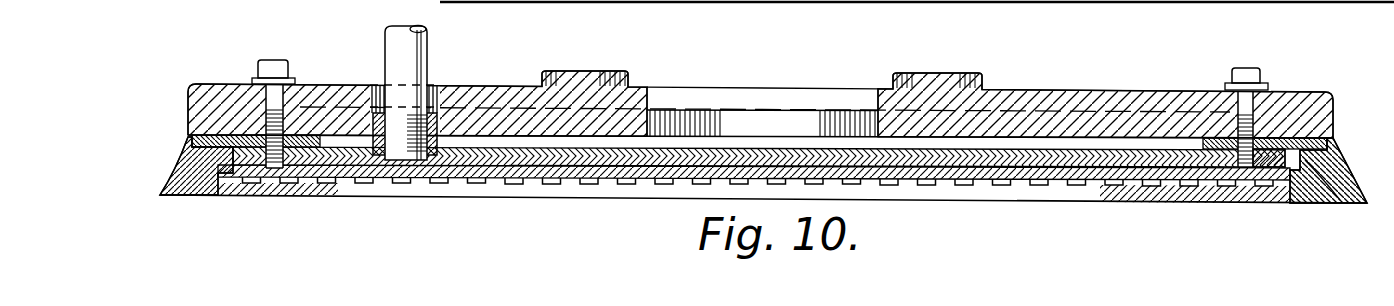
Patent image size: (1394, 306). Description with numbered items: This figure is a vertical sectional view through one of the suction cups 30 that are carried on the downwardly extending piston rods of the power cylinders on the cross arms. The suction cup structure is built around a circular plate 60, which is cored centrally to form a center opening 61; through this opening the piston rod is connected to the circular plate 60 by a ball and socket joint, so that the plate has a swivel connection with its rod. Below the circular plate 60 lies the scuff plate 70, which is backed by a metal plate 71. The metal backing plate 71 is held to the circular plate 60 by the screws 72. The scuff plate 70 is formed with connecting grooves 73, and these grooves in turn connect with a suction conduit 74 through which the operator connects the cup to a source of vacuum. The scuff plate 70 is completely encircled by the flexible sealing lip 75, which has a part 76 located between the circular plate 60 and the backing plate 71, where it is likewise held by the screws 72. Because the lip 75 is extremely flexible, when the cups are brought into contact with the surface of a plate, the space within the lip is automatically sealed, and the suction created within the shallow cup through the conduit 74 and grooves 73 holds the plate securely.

The suction cup 30 is at (1053, 90).
The circular plate 60 is at (622, 104).
The center opening 61 is at (827, 118).
The scuff plate 70 is at (558, 180).
The metal plate 71 is at (683, 160).
The screws 72 is at (276, 72).
The connecting grooves 73 is at (1040, 185).
The suction conduit 74 is at (407, 70).
The flexible sealing lip 75 is at (1340, 165).
The part of sealing lip 76 is at (1268, 145).